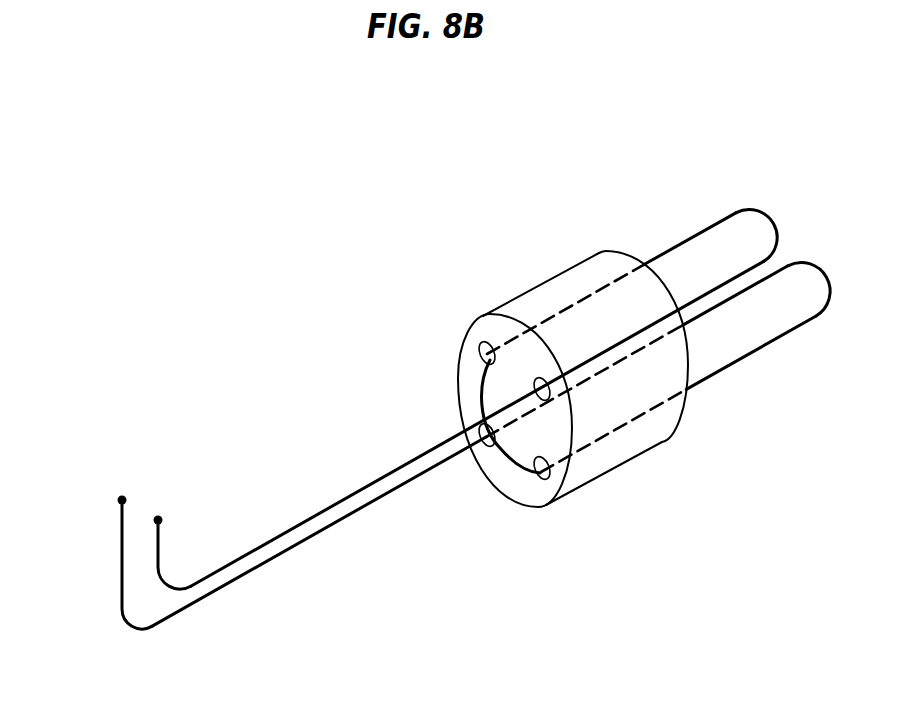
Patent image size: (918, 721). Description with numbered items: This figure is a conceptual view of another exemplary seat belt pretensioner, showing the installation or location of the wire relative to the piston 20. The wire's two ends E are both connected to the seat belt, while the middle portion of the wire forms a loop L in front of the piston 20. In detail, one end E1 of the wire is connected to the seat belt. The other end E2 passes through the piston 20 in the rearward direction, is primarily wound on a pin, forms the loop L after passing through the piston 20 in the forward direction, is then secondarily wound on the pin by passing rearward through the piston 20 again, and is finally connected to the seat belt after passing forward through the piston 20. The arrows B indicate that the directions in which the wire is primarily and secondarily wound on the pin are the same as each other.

The piston 20 is at (542, 297).
The loop L is at (508, 458).
The arrows B is at (776, 276).
The ends of the wire E is at (200, 384).
The one end of the wire E1 is at (158, 520).
The other end of the wire E2 is at (122, 500).